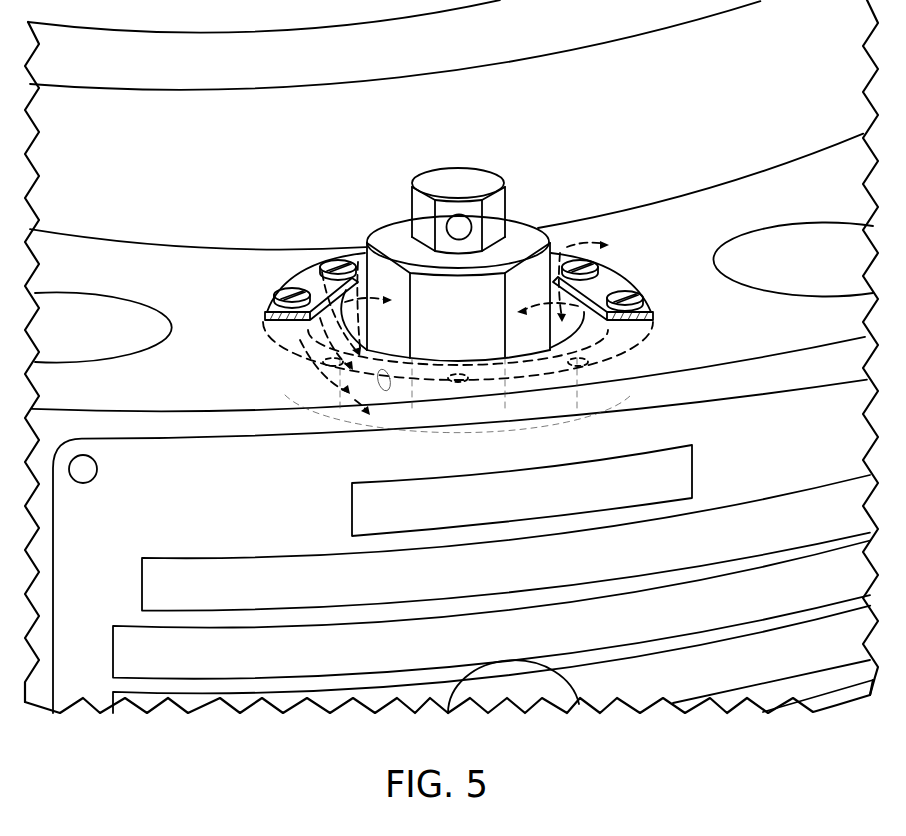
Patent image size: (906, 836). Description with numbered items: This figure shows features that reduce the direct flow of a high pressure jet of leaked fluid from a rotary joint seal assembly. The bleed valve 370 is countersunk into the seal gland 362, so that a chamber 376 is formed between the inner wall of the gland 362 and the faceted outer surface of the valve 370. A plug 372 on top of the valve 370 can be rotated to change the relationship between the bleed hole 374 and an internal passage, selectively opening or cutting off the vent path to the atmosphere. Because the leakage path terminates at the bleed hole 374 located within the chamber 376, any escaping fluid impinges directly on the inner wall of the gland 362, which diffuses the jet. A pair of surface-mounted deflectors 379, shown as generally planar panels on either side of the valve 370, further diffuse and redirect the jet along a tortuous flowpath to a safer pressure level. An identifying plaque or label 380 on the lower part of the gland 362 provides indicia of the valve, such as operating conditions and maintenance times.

The seal gland 362 is at (125, 193).
The bleed valve 370 is at (481, 324).
The plug 372 is at (502, 198).
The bleed hole 374 is at (383, 381).
The chamber 376 is at (340, 387).
The surface-mounted deflectors 379 is at (265, 305).
The identifying plaque or label 380 is at (793, 452).